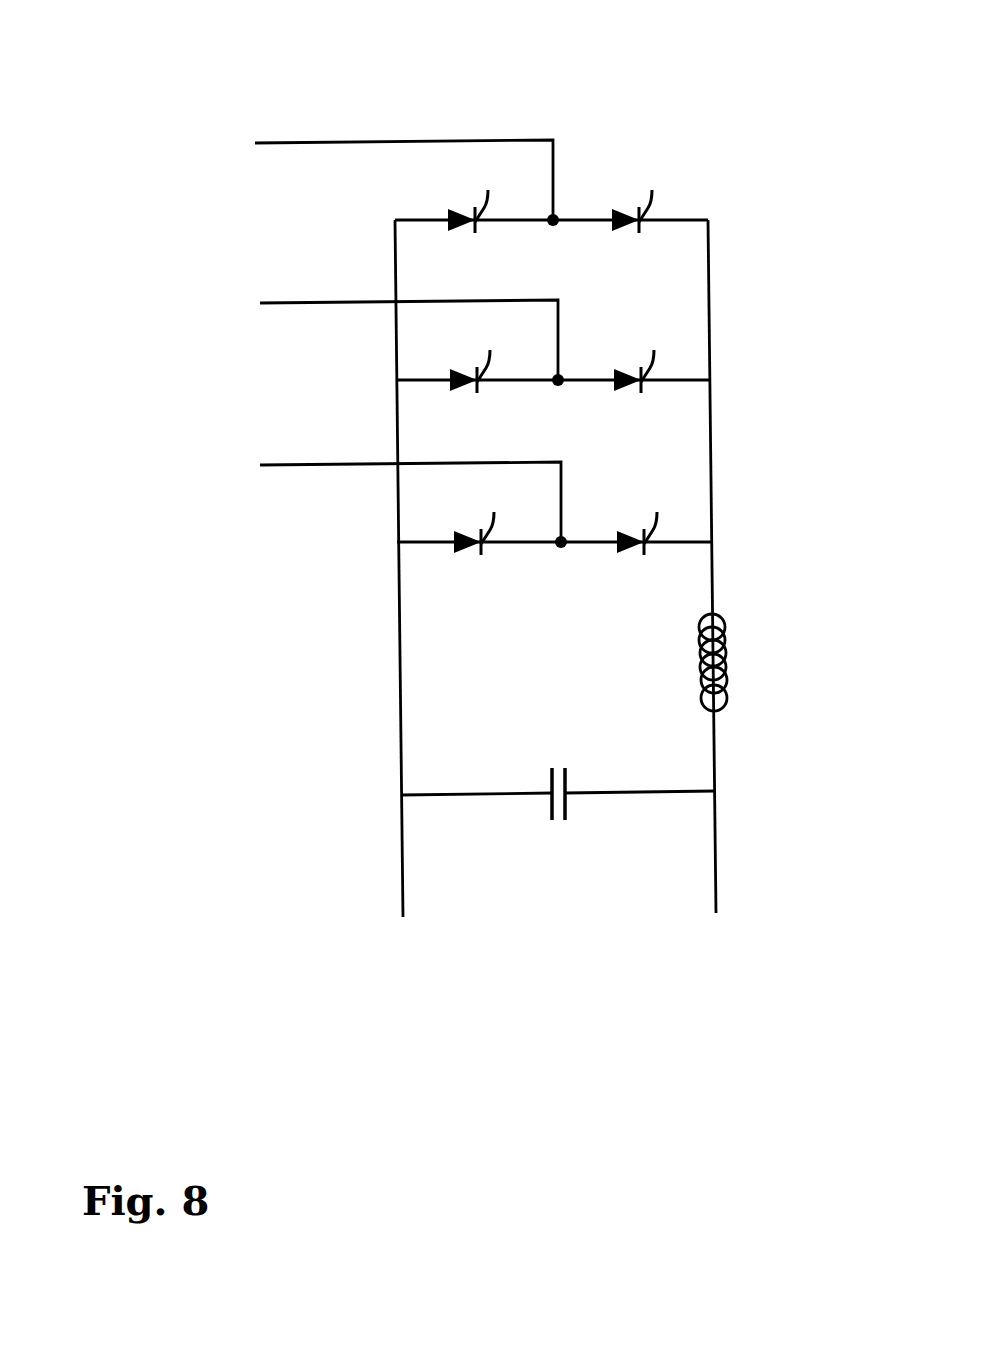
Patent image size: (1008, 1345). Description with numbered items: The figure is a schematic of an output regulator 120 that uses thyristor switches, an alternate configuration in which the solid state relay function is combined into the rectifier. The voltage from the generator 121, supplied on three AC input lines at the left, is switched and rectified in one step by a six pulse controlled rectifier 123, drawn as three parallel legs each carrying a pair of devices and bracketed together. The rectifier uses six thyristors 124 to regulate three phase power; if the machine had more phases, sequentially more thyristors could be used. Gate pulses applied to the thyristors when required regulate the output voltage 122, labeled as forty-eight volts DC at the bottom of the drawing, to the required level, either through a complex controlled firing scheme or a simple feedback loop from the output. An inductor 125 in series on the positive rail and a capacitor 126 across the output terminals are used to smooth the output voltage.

The three-phase rectifier circuit 120 is at (464, 538).
The voltage from the generator 121 is at (88, 312).
The output voltage 122 is at (538, 974).
The 6 pulse controlled rectifier 123 is at (666, 343).
The thyristor 124 is at (663, 182).
The inductor 125 is at (727, 667).
The capacitor 126 is at (566, 785).